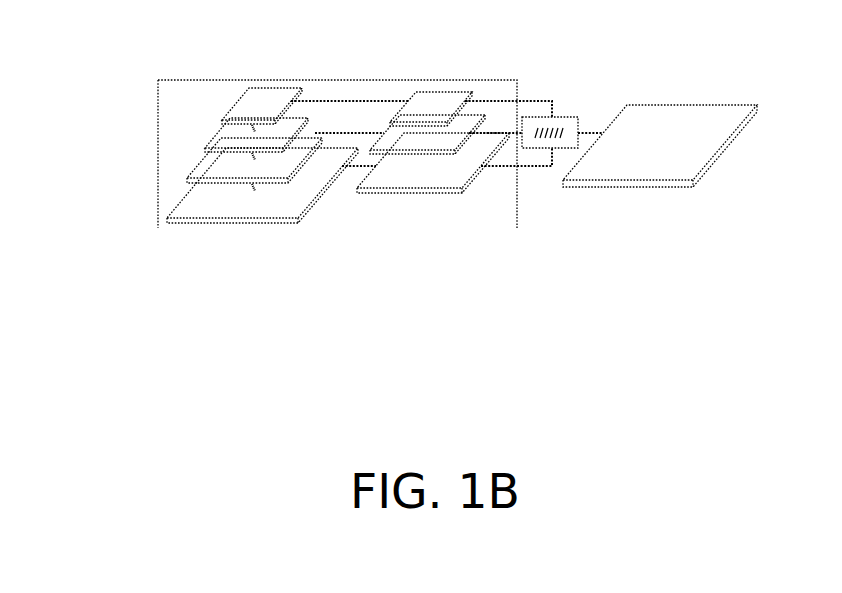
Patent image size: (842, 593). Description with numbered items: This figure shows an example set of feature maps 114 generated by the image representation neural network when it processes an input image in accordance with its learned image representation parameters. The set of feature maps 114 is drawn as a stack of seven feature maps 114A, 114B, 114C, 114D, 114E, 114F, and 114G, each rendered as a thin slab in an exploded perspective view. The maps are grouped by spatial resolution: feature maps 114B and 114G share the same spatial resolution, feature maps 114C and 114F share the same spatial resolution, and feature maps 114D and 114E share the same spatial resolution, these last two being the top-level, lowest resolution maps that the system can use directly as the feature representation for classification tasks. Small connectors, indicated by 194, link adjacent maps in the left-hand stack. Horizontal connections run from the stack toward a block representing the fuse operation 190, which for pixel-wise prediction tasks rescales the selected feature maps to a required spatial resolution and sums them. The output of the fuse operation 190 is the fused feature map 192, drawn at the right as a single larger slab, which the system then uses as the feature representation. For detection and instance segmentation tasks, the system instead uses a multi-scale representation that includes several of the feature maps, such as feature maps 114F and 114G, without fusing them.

The set of feature maps 114 is at (154, 77).
The feature map 114A is at (168, 211).
The feature map 114B is at (195, 173).
The feature map 114C is at (213, 133).
The feature map 114D is at (272, 82).
The feature map 114E is at (453, 88).
The feature map 114F is at (484, 112).
The feature map 114G is at (430, 190).
The fuse operation 190 is at (570, 117).
The fused feature map 192 is at (730, 150).
The interconnect vias 194 is at (255, 183).